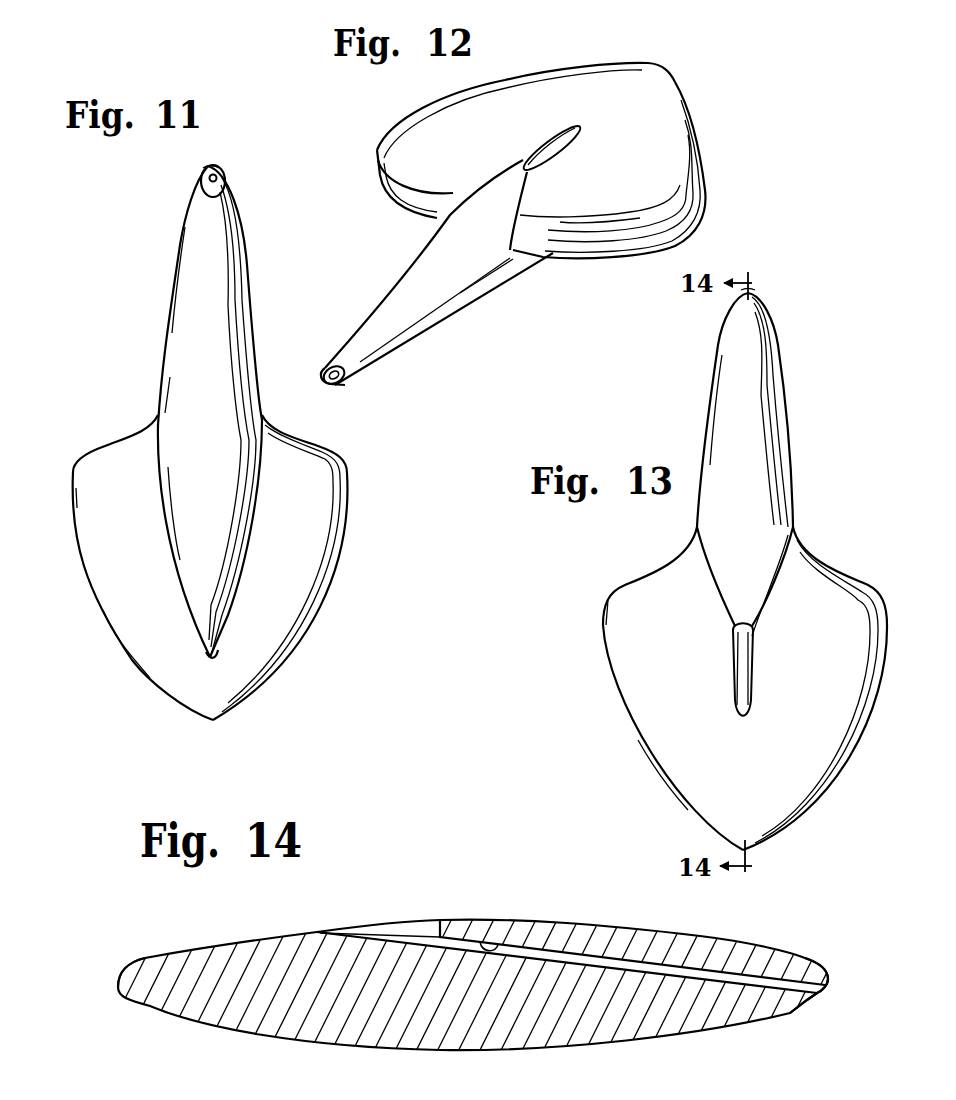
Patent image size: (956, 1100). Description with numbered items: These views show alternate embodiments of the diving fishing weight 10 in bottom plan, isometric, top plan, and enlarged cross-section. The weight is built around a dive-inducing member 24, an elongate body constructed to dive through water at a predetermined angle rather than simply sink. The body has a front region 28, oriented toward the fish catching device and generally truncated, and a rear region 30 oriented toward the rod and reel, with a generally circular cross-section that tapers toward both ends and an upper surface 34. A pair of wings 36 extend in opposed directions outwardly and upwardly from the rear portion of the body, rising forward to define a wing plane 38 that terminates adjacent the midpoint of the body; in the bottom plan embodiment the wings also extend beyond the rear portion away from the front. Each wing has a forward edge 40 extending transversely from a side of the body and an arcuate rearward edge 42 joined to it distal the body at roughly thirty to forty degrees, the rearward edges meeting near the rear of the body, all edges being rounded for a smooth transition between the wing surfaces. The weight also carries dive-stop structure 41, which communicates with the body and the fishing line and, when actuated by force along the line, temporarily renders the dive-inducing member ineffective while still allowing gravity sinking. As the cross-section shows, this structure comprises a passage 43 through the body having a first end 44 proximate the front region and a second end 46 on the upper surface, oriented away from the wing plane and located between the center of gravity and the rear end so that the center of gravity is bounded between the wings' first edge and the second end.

In FIG. 11, the diving fishing weight 10 is at (116, 321).
In FIG. 12, the diving fishing weight 10 is at (759, 92).
In FIG. 13, the diving fishing weight 10 is at (830, 399).
In FIG. 14, the diving fishing weight 10 is at (140, 918).
In FIG. 11, the dive-inducing member 24 is at (148, 285).
In FIG. 12, the dive-inducing member 24 is at (498, 311).
In FIG. 13, the dive-inducing member 24 is at (810, 441).
In FIG. 14, the dive-inducing member 24 is at (472, 980).
In FIG. 11, the front region 28 is at (229, 169).
In FIG. 12, the front region 28 is at (316, 374).
In FIG. 13, the front region 28 is at (766, 296).
In FIG. 14, the front region 28 is at (845, 950).
In FIG. 11, the rear region 30 is at (221, 662).
In FIG. 14, the rear region 30 is at (115, 999).
In FIG. 12, the upper surface 34 is at (461, 239).
In FIG. 13, the upper surface 34 is at (753, 560).
In FIG. 11, the wings 36 is at (141, 601).
In FIG. 12, the wings 36 is at (466, 158).
In FIG. 12, the wing plane 38 is at (690, 81).
In FIG. 13, the wing plane 38 is at (745, 688).
In FIG. 11, the forward edge 40 is at (118, 440).
In FIG. 12, the forward edge 40 is at (413, 190).
In FIG. 12, the dive-stop structure 41 is at (549, 127).
In FIG. 13, the dive-stop structure 41 is at (758, 692).
In FIG. 14, the dive-stop structure 41 is at (372, 910).
In FIG. 11, the arcuate rearward edge 42 is at (102, 632).
In FIG. 12, the arcuate rearward edge 42 is at (550, 76).
In FIG. 13, the arcuate rearward edge 42 is at (742, 691).
In FIG. 14, the passage 43 is at (488, 940).
In FIG. 11, the first end 44 is at (204, 172).
In FIG. 12, the first end 44 is at (337, 386).
In FIG. 14, the first end 44 is at (812, 993).
In FIG. 12, the second end 46 is at (578, 136).
In FIG. 13, the second end 46 is at (757, 680).
In FIG. 14, the second end 46 is at (390, 930).